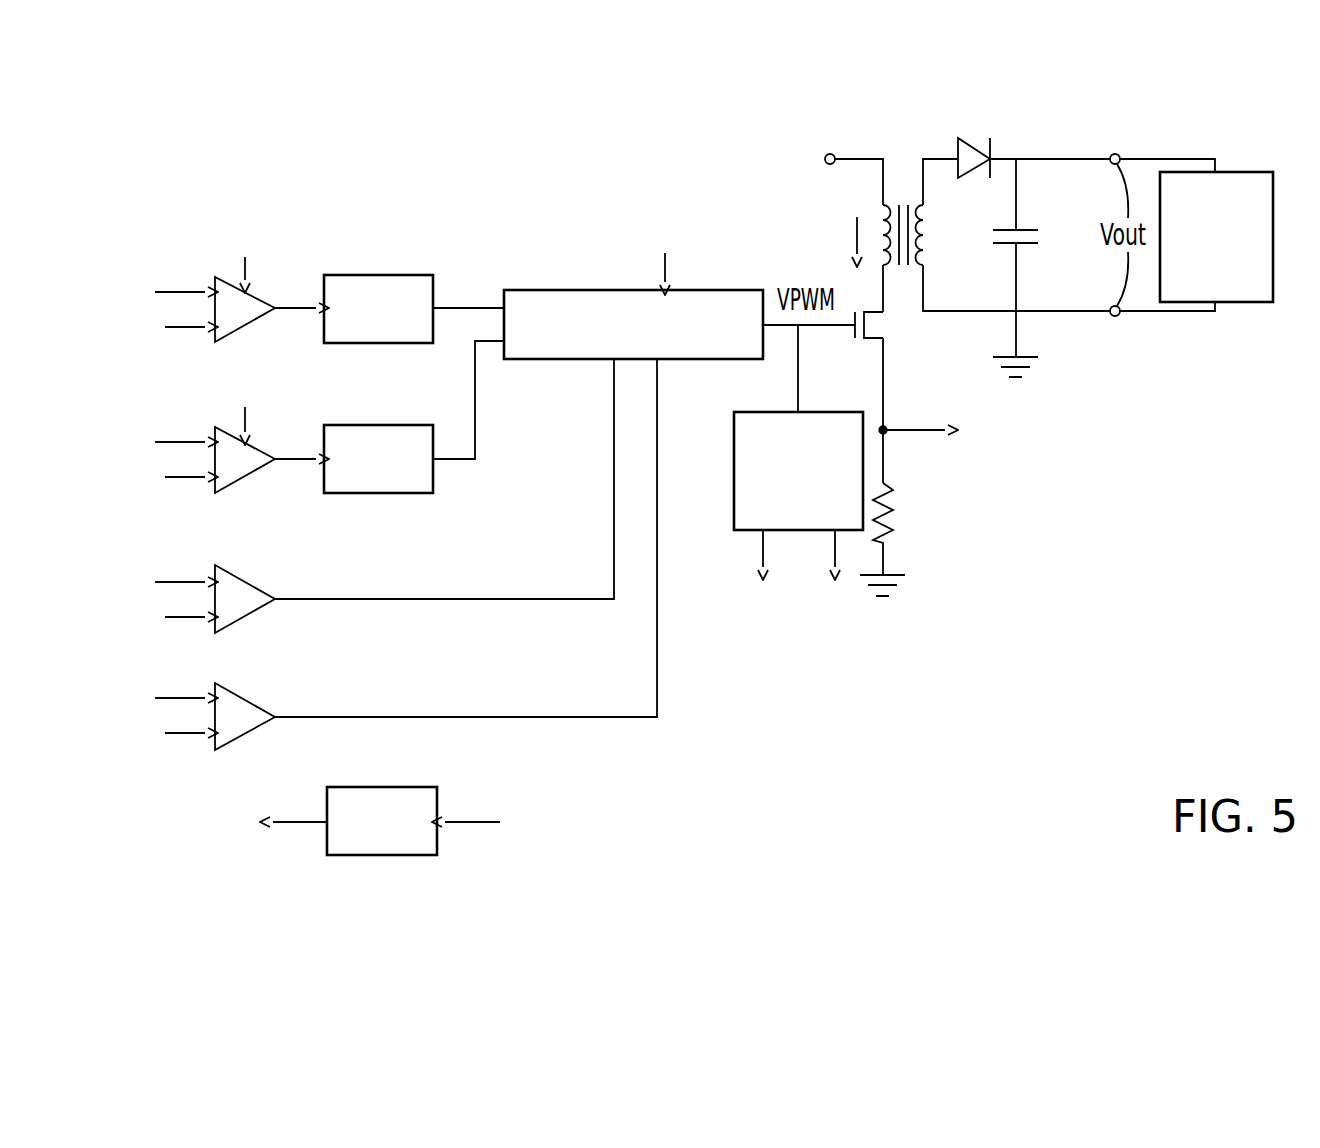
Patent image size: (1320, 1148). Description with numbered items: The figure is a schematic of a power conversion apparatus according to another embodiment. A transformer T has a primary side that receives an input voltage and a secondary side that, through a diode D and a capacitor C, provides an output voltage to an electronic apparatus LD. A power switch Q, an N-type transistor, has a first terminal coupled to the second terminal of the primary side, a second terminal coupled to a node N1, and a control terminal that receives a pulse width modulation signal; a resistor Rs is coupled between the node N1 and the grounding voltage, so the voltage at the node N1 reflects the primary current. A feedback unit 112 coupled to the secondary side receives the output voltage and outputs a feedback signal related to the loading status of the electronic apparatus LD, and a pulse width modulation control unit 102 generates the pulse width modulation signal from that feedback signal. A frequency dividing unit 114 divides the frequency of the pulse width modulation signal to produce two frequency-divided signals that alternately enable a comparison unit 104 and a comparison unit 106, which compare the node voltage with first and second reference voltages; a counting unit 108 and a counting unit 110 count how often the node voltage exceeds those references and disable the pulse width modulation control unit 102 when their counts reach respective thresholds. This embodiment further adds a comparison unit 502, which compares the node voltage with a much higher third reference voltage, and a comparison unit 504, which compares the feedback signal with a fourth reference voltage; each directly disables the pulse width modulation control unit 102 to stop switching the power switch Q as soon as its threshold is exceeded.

The pulse width modulation control unit 102 is at (715, 290).
The comparison unit 104 is at (238, 330).
The comparison unit 106 is at (238, 482).
The counting unit 108 is at (380, 275).
The counting unit 110 is at (380, 425).
The feedback unit 112 is at (383, 787).
The frequency dividing unit 114 is at (825, 410).
The comparison unit 502 is at (238, 620).
The comparison unit 504 is at (238, 738).
The transformer T is at (906, 172).
The power switch Q is at (879, 374).
The diode D is at (1034, 141).
The capacitor C is at (1027, 268).
The resistor Rs is at (892, 539).
The node N1 is at (886, 427).
The electronic apparatus LD is at (1274, 237).